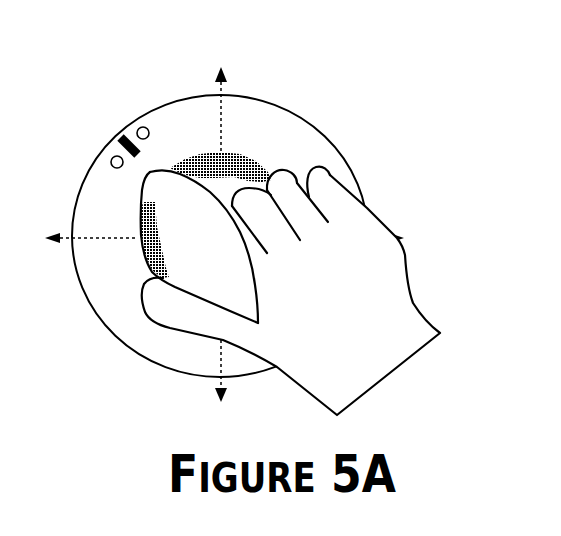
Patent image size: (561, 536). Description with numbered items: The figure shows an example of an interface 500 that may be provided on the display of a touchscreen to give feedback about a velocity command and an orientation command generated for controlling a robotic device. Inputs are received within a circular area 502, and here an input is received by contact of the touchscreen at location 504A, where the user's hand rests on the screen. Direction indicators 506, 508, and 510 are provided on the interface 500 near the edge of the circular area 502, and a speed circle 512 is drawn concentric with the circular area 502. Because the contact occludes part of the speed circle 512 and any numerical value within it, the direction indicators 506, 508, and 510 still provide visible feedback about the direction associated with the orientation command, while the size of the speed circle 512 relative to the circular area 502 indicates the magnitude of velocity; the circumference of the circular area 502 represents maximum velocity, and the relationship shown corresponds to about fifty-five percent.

The interface 500 is at (134, 38).
The circular area 502 is at (315, 128).
The location 504A is at (146, 184).
The direction indicator 506 is at (98, 152).
The direction indicator 508 is at (112, 128).
The direction indicator 510 is at (137, 115).
The speed circle 512 is at (242, 157).